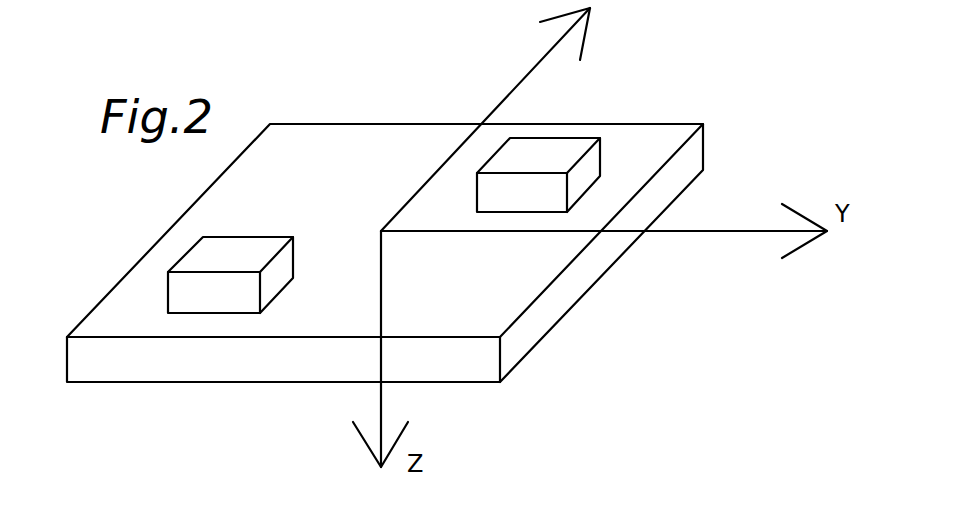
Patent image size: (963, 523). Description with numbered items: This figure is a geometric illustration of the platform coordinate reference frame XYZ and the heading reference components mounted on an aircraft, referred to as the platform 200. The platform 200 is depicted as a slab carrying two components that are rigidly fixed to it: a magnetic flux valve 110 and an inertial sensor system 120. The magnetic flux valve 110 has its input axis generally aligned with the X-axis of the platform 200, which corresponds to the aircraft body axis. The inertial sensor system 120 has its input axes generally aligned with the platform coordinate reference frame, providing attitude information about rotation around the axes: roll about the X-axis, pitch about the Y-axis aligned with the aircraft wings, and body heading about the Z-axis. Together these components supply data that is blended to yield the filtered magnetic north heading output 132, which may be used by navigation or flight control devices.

The platform 200 is at (232, 160).
The magnetic flux valve 110 is at (232, 236).
The inertial sensor system 120 is at (582, 178).
The filtered magnetic north heading output 132 is at (692, 0).